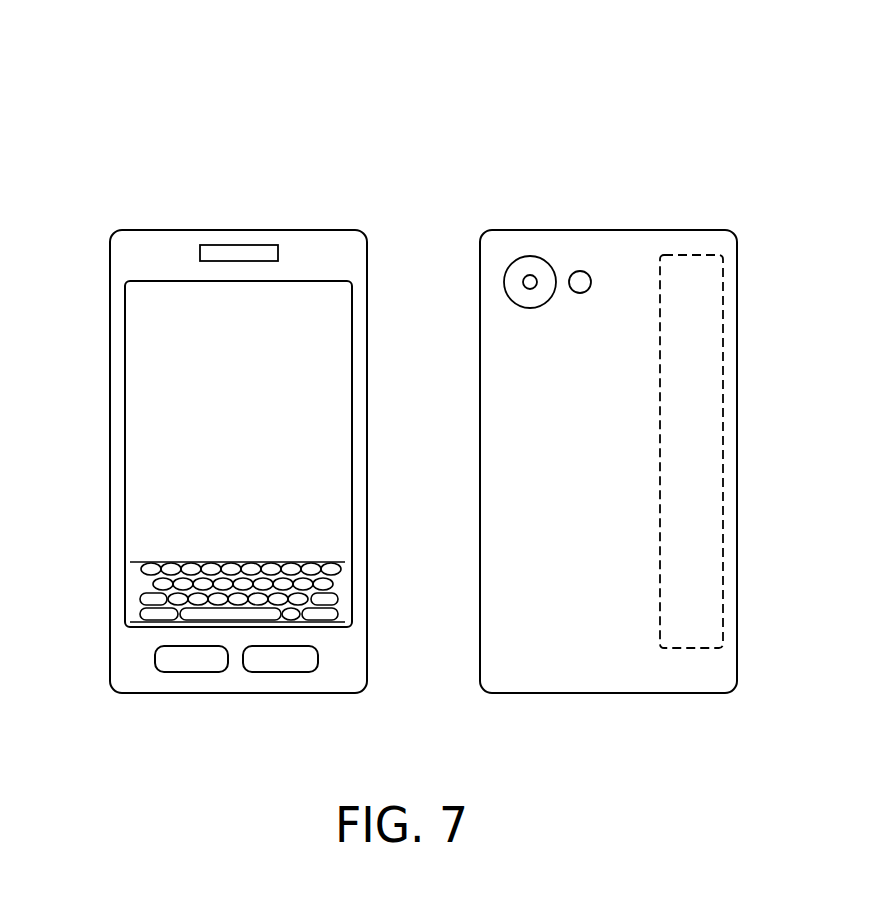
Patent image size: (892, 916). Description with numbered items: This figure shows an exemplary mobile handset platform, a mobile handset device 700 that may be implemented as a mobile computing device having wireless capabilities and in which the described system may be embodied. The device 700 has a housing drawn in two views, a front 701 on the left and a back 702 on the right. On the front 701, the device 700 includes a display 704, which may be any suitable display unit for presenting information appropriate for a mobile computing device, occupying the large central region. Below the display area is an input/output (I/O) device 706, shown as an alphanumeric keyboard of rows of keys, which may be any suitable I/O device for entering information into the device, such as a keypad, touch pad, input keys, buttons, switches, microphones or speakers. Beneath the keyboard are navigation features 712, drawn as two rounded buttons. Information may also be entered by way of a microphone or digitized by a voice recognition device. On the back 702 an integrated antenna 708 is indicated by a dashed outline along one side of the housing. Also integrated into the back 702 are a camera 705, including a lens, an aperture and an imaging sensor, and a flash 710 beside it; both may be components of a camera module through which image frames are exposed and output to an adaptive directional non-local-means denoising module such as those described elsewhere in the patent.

The mobile handset device 700 is at (113, 81).
The front 701 is at (215, 219).
The back 702 is at (530, 217).
The display 704 is at (258, 466).
The camera 705 is at (517, 293).
The input/output (I/O) device 706 is at (134, 586).
The integrated antenna 708 is at (710, 464).
The flash 710 is at (591, 279).
The navigation features 712 is at (155, 661).